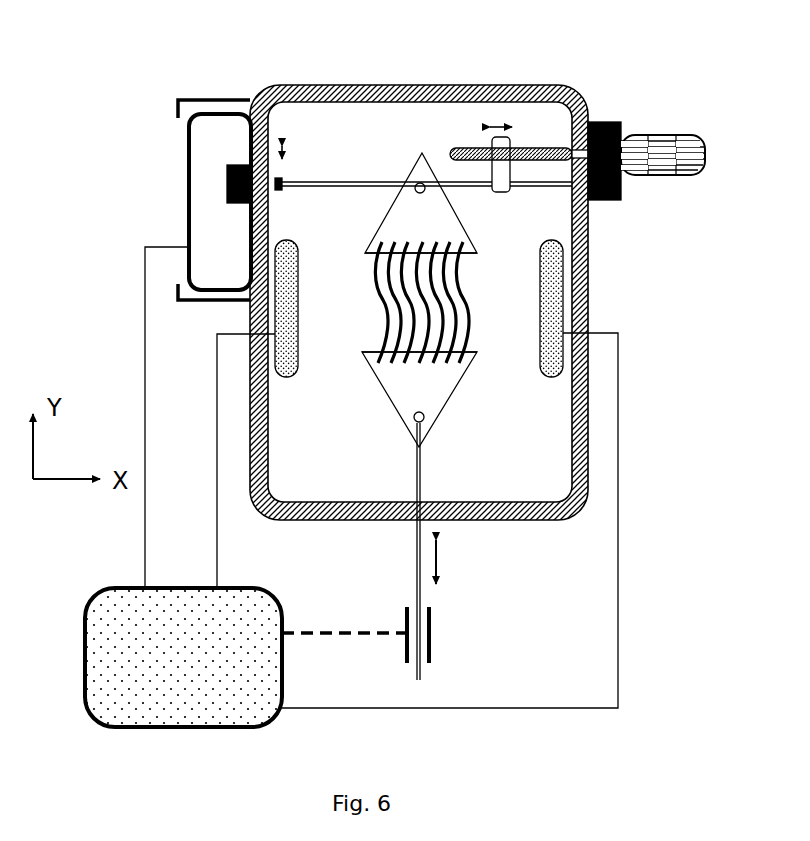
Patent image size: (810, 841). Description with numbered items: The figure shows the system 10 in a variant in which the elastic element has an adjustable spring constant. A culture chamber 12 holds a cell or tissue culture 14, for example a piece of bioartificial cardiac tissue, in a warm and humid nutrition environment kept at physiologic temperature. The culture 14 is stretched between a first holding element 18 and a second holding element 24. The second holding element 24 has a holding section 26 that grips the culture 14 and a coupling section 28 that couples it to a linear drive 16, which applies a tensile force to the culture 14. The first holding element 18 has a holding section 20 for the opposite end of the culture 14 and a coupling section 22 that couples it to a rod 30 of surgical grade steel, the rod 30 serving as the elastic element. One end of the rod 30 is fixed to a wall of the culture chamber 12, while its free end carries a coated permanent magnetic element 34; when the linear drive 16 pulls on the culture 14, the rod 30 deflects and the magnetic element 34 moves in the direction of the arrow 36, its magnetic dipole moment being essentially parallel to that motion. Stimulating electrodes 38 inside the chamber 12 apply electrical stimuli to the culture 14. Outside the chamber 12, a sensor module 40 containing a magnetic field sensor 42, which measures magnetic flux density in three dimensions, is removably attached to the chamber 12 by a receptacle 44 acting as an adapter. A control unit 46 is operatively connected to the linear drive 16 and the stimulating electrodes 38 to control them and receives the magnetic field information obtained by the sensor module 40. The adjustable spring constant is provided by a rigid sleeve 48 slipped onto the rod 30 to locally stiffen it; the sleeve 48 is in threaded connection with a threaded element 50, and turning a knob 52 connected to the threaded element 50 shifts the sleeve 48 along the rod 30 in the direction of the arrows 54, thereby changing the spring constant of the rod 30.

The system 10 is at (553, 58).
The culture chamber 12 is at (347, 85).
The cell or tissue culture 14 is at (458, 322).
The linear drive 16 is at (392, 650).
The first holding element 18 is at (426, 190).
The upper support plate 20 is at (365, 253).
The coupling section 22 is at (418, 170).
The second holding element 24 is at (429, 384).
The holding section 26 is at (366, 351).
The coupling section 28 is at (408, 419).
The rod 30 is at (293, 181).
The magnetic element 34 is at (278, 193).
The arrow 36 is at (284, 141).
The stimulating electrodes 38 is at (288, 382).
The sensor module 40 is at (188, 193).
The magnetic field sensor 42 is at (226, 183).
The receptacle 44 is at (192, 98).
The control unit 46 is at (205, 710).
The rigid sleeve 48 is at (507, 166).
The threaded element 50 is at (530, 147).
The knob 52 is at (643, 135).
The arrows 54 is at (500, 126).